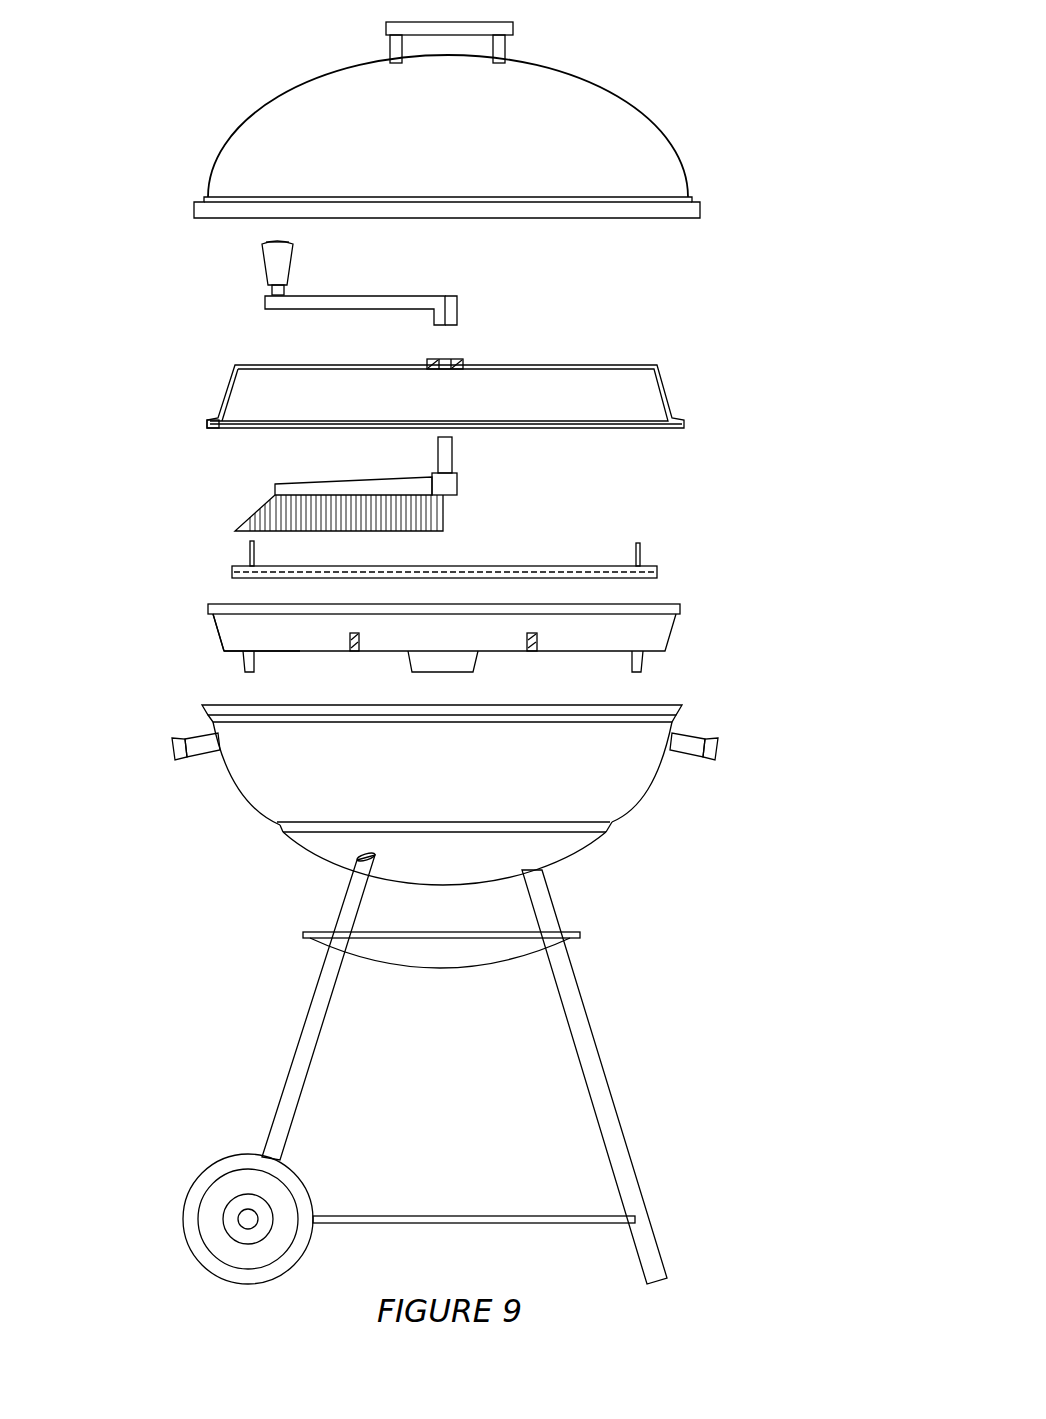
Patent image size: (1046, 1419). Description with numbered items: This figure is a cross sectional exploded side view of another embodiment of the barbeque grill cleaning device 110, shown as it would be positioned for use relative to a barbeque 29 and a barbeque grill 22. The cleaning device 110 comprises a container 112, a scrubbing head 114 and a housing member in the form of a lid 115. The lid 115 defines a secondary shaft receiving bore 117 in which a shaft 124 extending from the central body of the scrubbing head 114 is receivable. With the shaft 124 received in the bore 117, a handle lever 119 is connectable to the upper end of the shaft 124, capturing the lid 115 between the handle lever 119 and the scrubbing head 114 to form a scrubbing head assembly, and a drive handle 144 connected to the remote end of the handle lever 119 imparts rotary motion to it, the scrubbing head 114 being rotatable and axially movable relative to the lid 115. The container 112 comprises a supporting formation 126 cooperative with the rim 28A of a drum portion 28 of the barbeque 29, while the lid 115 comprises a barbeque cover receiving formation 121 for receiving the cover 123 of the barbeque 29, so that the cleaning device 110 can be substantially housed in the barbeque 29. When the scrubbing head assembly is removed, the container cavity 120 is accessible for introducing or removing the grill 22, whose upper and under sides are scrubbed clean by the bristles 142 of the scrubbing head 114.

The barbeque grill cleaning device 110 is at (204, 330).
The container 112 is at (672, 630).
The scrubbing head 114 is at (273, 490).
The lid 115 is at (667, 393).
The secondary shaft receiving bore 117 is at (448, 357).
The handle lever 119 is at (370, 292).
The container cavity 120 is at (242, 632).
The barbeque cover receiving formation 121 is at (213, 420).
The cover 123 is at (627, 137).
The shaft 124 is at (445, 453).
The supporting formation 126 is at (217, 618).
The bristles 142 is at (428, 512).
The drive handle 144 is at (274, 263).
The barbeque grill 22 is at (655, 568).
The drum portion 28 is at (640, 804).
The rim 28A is at (690, 712).
The barbeque 29 is at (600, 1095).